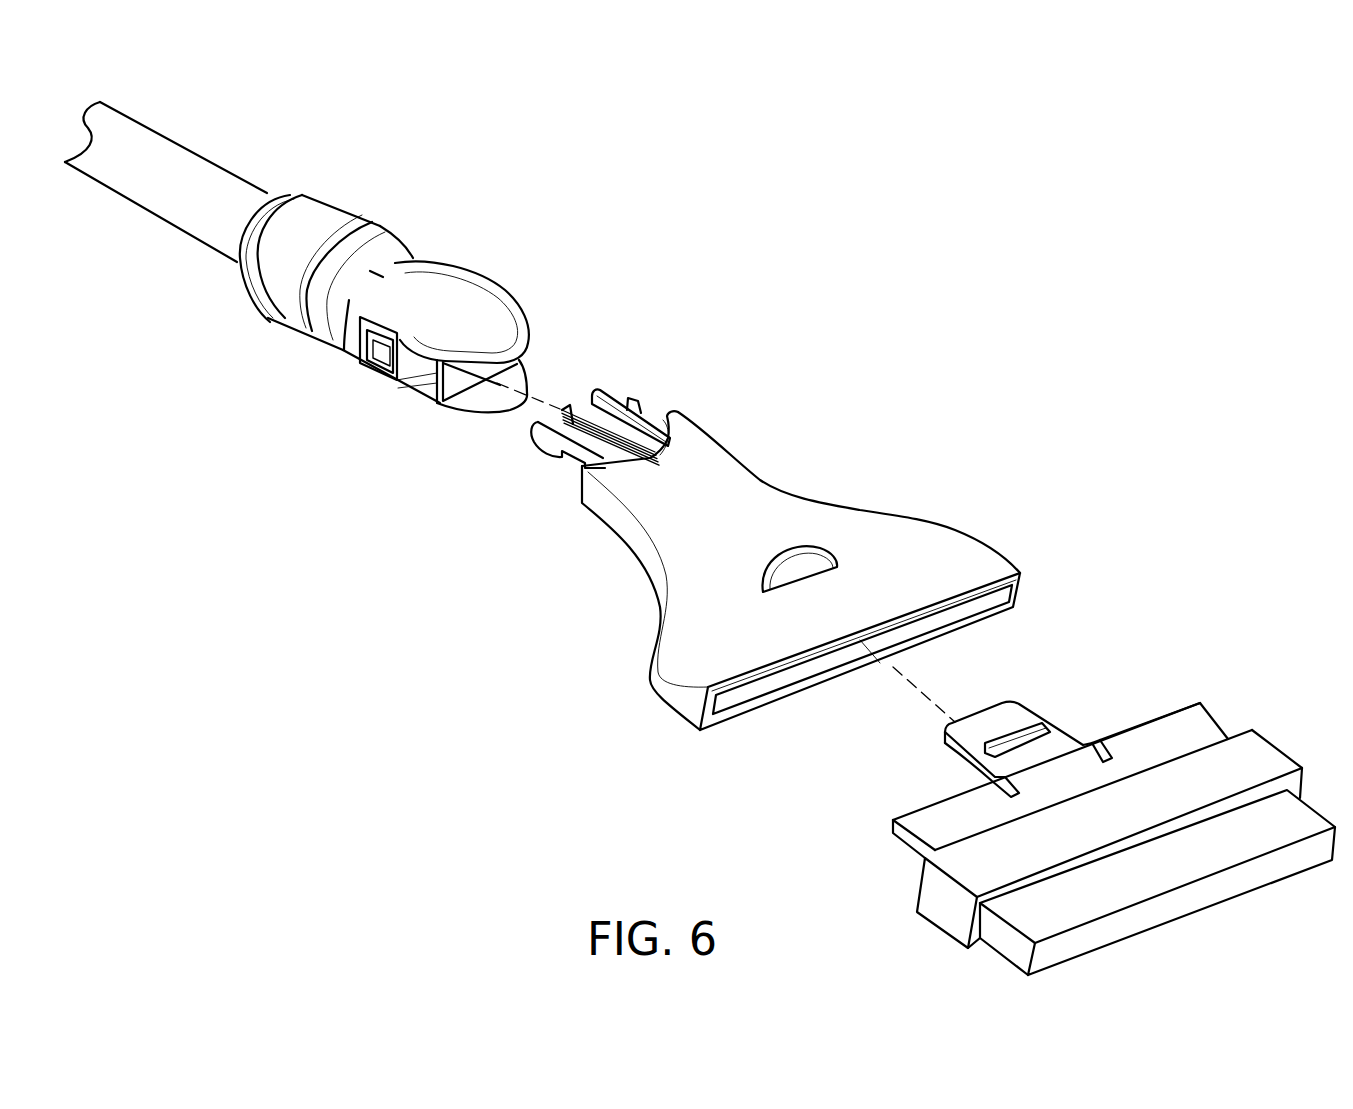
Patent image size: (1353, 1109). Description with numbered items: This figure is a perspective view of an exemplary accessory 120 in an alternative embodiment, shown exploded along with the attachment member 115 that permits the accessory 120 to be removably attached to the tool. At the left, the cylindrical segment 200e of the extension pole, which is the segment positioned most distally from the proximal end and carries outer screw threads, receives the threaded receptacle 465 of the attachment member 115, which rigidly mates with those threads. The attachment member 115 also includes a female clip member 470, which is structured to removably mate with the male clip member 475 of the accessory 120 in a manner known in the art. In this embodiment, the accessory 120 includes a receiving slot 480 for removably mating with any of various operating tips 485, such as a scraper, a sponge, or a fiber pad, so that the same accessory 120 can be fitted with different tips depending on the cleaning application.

The attachment member 115 is at (447, 228).
The cylindrical segment 200e is at (180, 172).
The threaded receptacle 465 is at (283, 304).
The female clip member 470 is at (458, 306).
The male clip member 475 is at (614, 394).
The accessory 120 is at (823, 447).
The receiving slot 480 is at (983, 600).
The operating tip 485 is at (1210, 672).